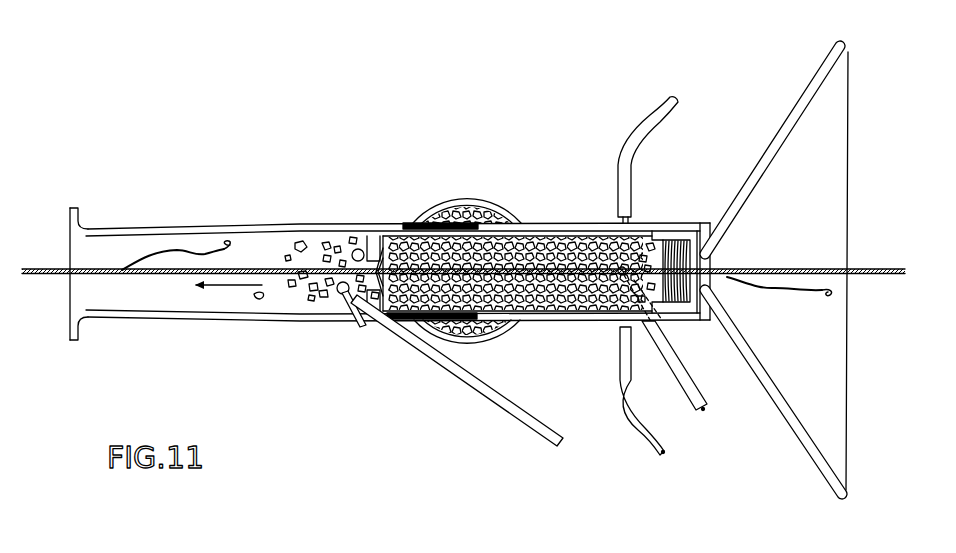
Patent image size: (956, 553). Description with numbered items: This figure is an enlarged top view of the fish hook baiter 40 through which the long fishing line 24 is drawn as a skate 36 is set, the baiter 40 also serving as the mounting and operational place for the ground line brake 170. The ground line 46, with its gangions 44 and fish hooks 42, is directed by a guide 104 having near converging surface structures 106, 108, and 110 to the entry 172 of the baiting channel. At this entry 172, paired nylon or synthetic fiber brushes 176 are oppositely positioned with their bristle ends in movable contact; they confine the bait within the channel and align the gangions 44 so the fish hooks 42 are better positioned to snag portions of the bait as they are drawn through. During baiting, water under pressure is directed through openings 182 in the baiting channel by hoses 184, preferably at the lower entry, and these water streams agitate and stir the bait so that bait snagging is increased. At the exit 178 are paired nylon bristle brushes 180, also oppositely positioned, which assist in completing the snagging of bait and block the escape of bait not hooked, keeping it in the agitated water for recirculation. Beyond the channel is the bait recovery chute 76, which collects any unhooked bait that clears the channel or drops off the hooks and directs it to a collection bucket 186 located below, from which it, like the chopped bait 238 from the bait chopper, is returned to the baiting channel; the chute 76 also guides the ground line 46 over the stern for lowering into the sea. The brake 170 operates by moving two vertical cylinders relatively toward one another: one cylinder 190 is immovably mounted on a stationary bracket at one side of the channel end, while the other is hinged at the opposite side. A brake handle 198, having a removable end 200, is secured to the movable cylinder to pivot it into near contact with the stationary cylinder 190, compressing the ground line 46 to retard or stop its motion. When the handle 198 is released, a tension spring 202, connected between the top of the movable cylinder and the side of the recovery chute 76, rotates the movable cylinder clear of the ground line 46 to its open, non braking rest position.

The long fishing line 24 is at (51, 264).
The skate 36 is at (162, 280).
The fish hook baiter 40 is at (537, 329).
The fish hooks 42 is at (833, 301).
The gangions 44 is at (770, 289).
The ground line 46 is at (858, 279).
The bait recovery chute 76 is at (110, 324).
The guide 104 is at (805, 84).
The converging surface structure 106 is at (775, 415).
The converging surface structure 108 is at (780, 122).
The converging surface structure 110 is at (848, 203).
The ground line brake 170 is at (338, 298).
The entry 172 is at (708, 329).
The synthetic fiber brushes 176 is at (673, 237).
The exit 178 is at (403, 224).
The nylon bristle brushes 180 is at (379, 237).
The openings 182 is at (620, 266).
The hoses 184 is at (640, 128).
The collection bucket 186 is at (436, 211).
The stationary braking cylinder 190 is at (352, 251).
The brake handle 198 is at (449, 379).
The removable end 200 is at (500, 409).
The tension spring 202 is at (364, 333).
The chopped bait 238 is at (258, 301).